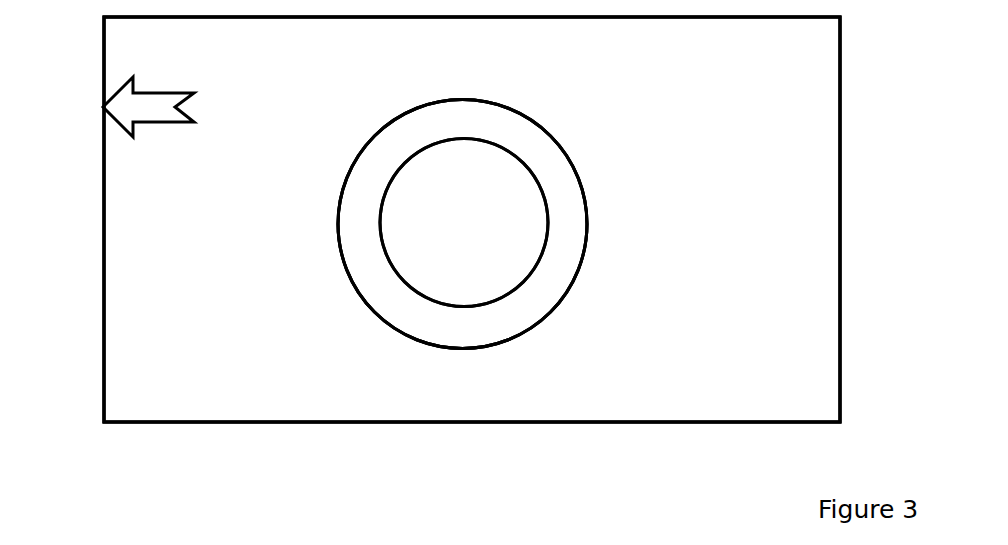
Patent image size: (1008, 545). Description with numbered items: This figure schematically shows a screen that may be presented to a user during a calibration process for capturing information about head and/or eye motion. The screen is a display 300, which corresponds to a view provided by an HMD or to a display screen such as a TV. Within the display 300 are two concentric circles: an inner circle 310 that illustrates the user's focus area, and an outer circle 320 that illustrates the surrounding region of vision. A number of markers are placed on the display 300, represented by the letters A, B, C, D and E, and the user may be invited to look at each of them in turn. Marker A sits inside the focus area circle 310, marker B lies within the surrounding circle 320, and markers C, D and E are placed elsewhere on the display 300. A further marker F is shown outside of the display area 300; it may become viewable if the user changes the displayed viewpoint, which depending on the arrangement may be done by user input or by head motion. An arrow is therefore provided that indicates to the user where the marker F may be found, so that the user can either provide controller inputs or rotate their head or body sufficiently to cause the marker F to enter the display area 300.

The display 300 is at (437, 258).
The focus area circle 310 is at (464, 223).
The surrounding region of vision circle 320 is at (462, 224).
The marker A is at (464, 223).
The marker B is at (462, 224).
The marker C is at (479, 224).
The marker D is at (472, 219).
The marker E is at (472, 219).
The marker F is at (100, 107).